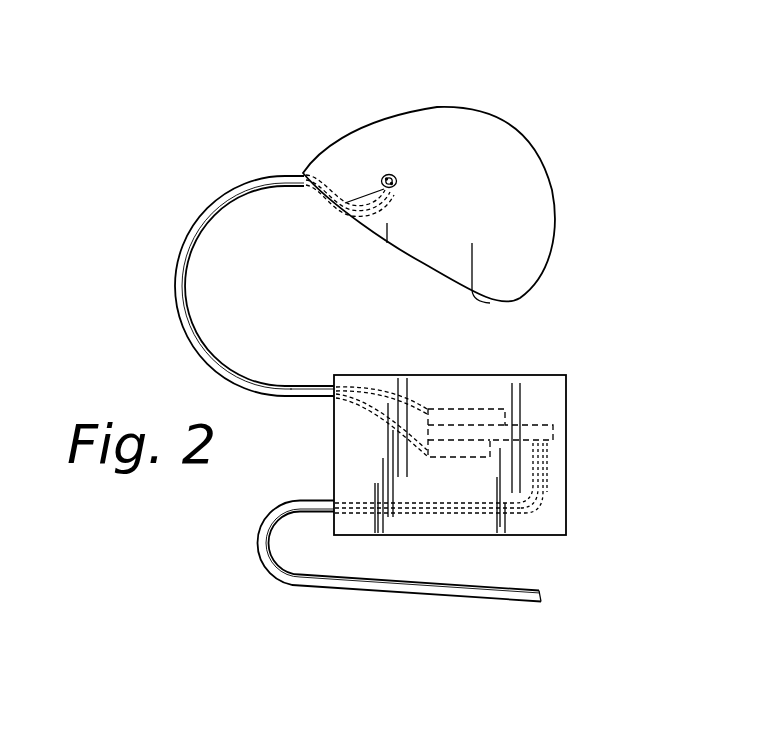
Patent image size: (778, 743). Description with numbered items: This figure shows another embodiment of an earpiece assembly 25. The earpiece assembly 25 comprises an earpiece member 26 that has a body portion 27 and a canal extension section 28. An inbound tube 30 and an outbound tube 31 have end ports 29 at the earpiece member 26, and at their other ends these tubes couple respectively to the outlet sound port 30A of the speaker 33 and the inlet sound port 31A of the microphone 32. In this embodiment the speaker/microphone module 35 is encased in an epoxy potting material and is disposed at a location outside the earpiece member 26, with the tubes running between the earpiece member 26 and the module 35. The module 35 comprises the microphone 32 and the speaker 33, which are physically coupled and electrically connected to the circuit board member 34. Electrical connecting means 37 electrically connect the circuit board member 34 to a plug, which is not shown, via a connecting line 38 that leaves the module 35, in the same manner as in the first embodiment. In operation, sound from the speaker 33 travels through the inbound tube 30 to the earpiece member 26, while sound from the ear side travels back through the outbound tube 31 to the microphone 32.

The earpiece assembly 25 is at (603, 247).
The earpiece member 26 is at (396, 106).
The body portion 27 is at (507, 162).
The canal extension section 28 is at (387, 225).
The end ports 29 is at (394, 172).
The inbound tube 30 is at (324, 170).
The outbound tube 31 is at (312, 205).
The outlet sound port 30A is at (333, 382).
The inlet sound port 31A is at (332, 398).
The microphone 32 is at (460, 452).
The speaker 33 is at (484, 414).
The circuit board member 34 is at (445, 432).
The speaker/microphone module 35 is at (572, 402).
The electrical connecting means 37 is at (547, 468).
The connecting line 38 is at (257, 553).